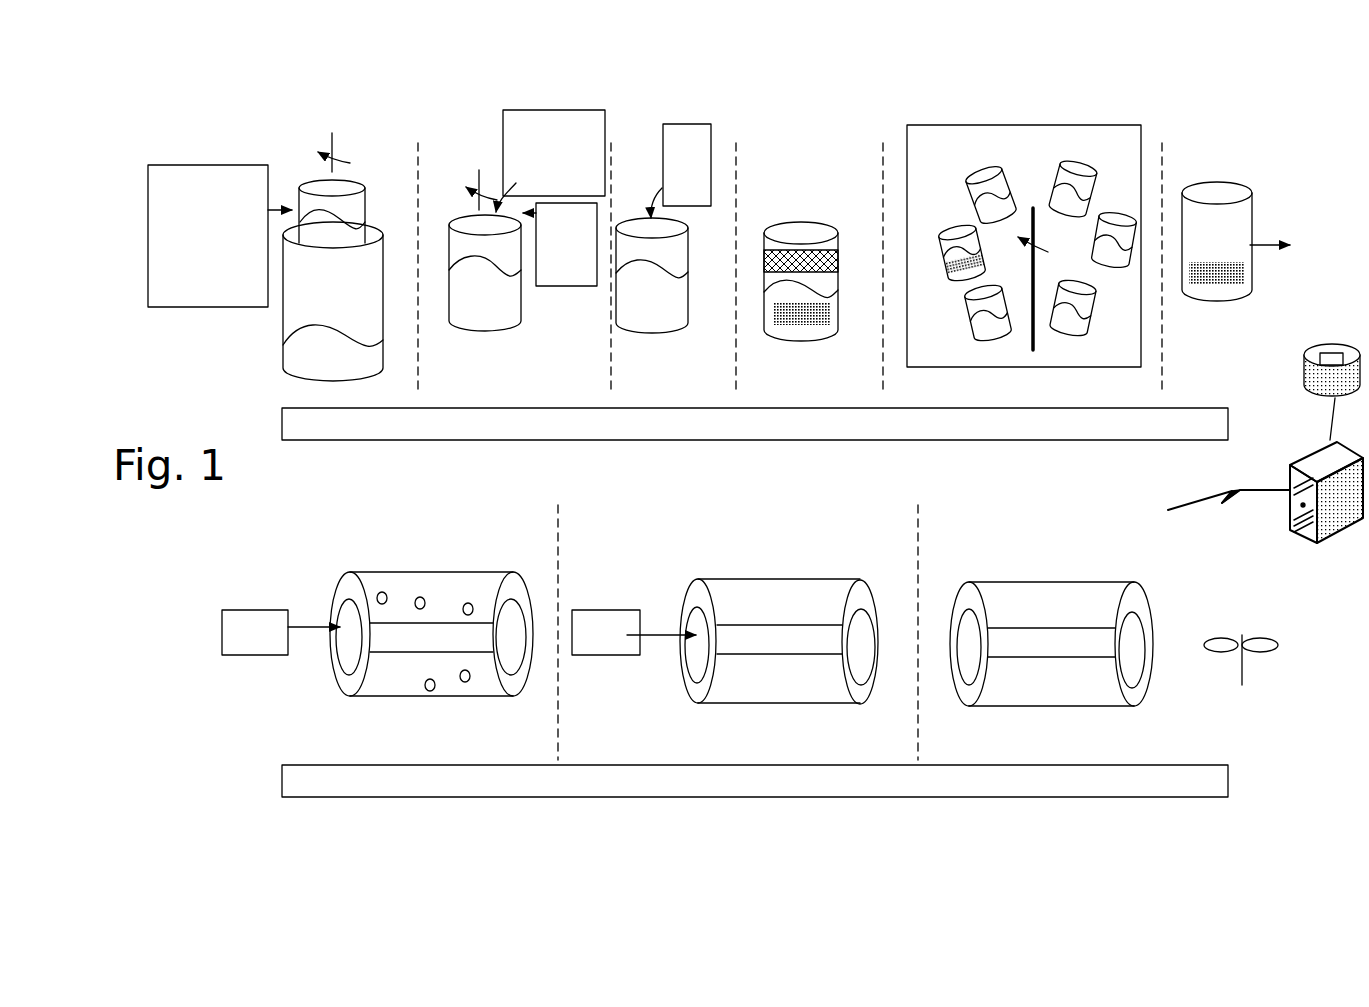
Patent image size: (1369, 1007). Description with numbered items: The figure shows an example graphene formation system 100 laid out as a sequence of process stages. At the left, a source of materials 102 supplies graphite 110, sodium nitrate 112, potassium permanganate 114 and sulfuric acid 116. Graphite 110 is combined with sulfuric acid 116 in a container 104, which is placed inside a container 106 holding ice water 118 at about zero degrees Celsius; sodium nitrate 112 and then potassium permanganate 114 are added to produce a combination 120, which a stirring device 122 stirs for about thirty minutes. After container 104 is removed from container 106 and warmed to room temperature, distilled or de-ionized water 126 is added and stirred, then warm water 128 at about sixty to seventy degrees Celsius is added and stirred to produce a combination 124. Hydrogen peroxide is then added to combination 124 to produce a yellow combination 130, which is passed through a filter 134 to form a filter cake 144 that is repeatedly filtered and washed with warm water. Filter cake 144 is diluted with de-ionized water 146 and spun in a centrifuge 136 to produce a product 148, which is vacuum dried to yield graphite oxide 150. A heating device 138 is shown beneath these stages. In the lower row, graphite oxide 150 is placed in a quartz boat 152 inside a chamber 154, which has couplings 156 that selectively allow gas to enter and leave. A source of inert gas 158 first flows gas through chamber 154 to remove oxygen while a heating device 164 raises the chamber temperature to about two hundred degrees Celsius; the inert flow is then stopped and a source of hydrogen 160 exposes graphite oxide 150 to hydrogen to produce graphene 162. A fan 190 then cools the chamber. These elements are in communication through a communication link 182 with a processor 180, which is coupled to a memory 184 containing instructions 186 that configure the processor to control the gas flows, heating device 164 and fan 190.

The graphene formation system 100 is at (805, 98).
The source of materials 102 is at (229, 164).
The container 104 is at (349, 178).
The container 106 is at (366, 368).
The graphite 110 is at (175, 191).
The sodium nitrate 112 is at (160, 210).
The potassium permanganate 114 is at (164, 230).
The sulfuric acid 116 is at (165, 274).
The ice water 118 is at (361, 340).
The combination 120 is at (346, 229).
The stirring device 122 is at (303, 152).
The combination 124 is at (498, 272).
The water 126 is at (503, 140).
The warm water 128 is at (571, 288).
The combination 130 is at (800, 326).
The filter 134 is at (838, 276).
The centrifuge 136 is at (1023, 367).
The heating device 138 is at (641, 441).
The filter cake 144 is at (949, 268).
The de-ionized water 146 is at (942, 258).
The product 148 is at (1222, 290).
The graphite oxide 150 is at (1250, 223).
The quartz boat 152 is at (392, 636).
The chamber 154 is at (441, 594).
The couplings 156 is at (347, 593).
The source of inert gas 158 is at (259, 655).
The source of hydrogen 160 is at (600, 658).
The graphene 162 is at (1061, 604).
The heating device 164 is at (608, 798).
The processor 180 is at (1300, 545).
The communication link 182 is at (1227, 500).
The memory 184 is at (1314, 395).
The instructions 186 is at (1324, 351).
The fan 190 is at (1250, 670).